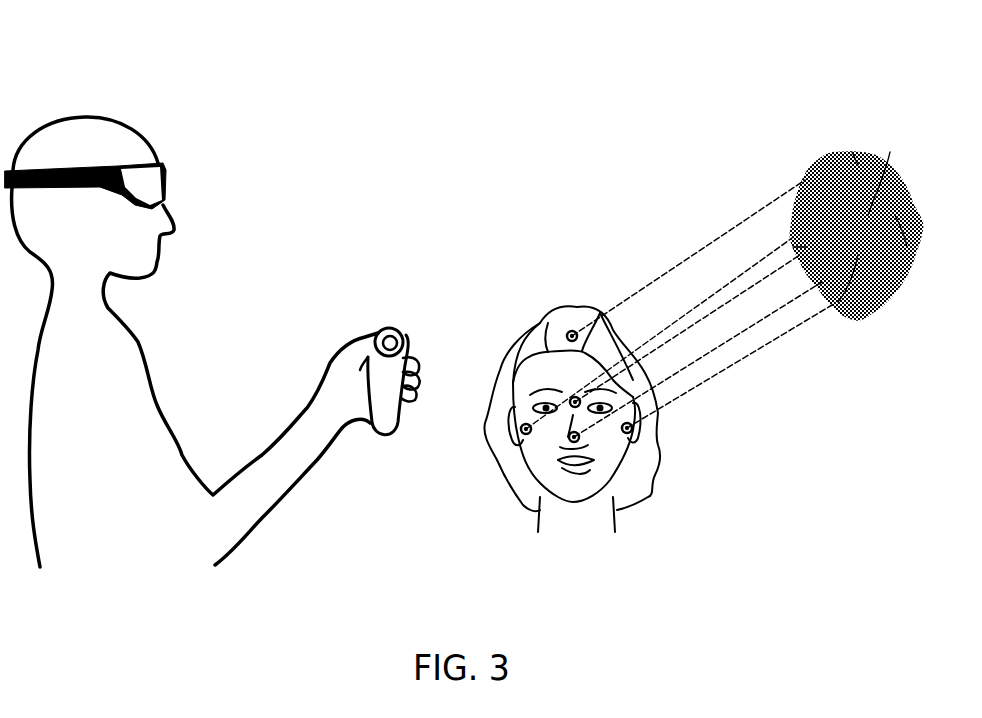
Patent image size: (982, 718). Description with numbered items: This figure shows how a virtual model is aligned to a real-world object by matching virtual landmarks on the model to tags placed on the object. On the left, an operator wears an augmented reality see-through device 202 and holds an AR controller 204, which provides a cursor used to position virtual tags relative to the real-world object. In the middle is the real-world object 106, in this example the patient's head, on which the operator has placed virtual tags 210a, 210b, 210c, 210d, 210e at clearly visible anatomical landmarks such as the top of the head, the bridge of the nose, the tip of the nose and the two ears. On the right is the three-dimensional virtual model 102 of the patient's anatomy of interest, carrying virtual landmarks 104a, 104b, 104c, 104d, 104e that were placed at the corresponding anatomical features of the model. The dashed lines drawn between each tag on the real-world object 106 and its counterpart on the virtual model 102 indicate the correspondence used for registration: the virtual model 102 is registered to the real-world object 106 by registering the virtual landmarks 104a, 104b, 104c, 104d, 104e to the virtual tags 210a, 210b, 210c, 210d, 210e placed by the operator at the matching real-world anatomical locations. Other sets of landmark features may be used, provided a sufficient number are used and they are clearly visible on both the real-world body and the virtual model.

The augmented reality see-through device 202 is at (150, 180).
The AR controller 204 is at (410, 330).
The real-world object 106 is at (514, 298).
The virtual tag 210a is at (553, 320).
The virtual tag 210b is at (572, 400).
The virtual tag 210c is at (572, 445).
The virtual tag 210d is at (522, 429).
The virtual tag 210e is at (630, 437).
The 3D virtual model 102 is at (822, 162).
The virtual landmark 104a is at (852, 152).
The virtual landmark 104b is at (890, 152).
The virtual landmark 104c is at (838, 302).
The virtual landmark 104d is at (793, 247).
The virtual landmark 104e is at (907, 247).